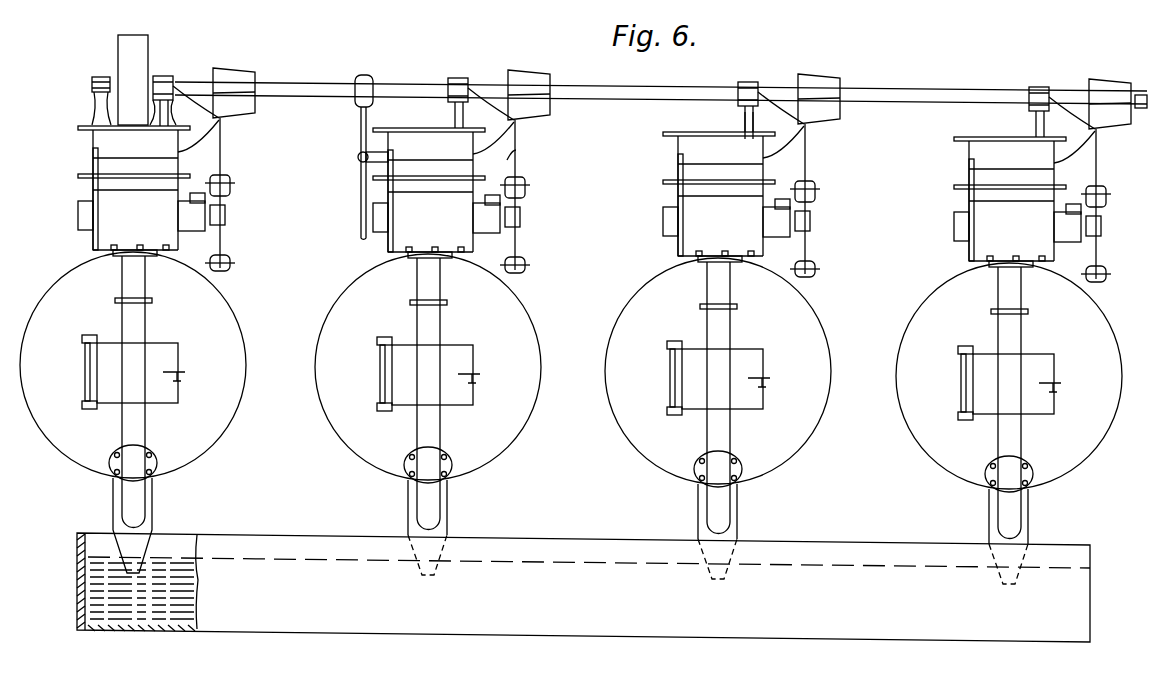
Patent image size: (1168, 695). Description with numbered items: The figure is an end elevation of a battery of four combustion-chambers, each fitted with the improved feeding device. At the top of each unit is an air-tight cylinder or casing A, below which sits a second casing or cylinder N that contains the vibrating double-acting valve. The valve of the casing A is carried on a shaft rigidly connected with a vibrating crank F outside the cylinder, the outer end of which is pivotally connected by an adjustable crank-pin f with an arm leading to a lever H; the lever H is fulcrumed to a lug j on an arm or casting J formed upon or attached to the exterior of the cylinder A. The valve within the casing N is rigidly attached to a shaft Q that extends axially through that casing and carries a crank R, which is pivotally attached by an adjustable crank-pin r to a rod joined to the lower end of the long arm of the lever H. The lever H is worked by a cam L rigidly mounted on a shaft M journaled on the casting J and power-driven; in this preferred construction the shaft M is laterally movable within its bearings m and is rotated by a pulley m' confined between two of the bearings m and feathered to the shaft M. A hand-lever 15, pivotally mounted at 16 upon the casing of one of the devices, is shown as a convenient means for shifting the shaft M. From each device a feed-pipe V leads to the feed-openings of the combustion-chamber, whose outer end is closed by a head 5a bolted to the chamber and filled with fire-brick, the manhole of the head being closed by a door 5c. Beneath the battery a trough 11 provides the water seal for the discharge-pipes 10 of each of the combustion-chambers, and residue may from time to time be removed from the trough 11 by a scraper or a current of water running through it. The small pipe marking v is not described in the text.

The shaft M is at (300, 91).
The pulley m' is at (150, 71).
The bearings m is at (573, 94).
The cam L is at (232, 82).
The air-tight cylinder or casing A is at (175, 166).
The second casing or cylinder N is at (990, 229).
The vibrating crank F is at (517, 201).
The adjustable crank-pin f is at (525, 189).
The crank R is at (516, 243).
The adjustable crank-pin r is at (527, 266).
The shaft Q is at (806, 232).
The lug j is at (800, 136).
The arm or casting J is at (745, 122).
The lever H is at (524, 152).
The hand-lever 15 is at (360, 200).
The pivot 16 is at (357, 156).
The head 5a is at (571, 370).
The feed-pipe V is at (122, 429).
The collar v is at (122, 276).
The door 5c is at (170, 354).
The discharge-pipes 10 is at (138, 536).
The trough 11 is at (583, 587).